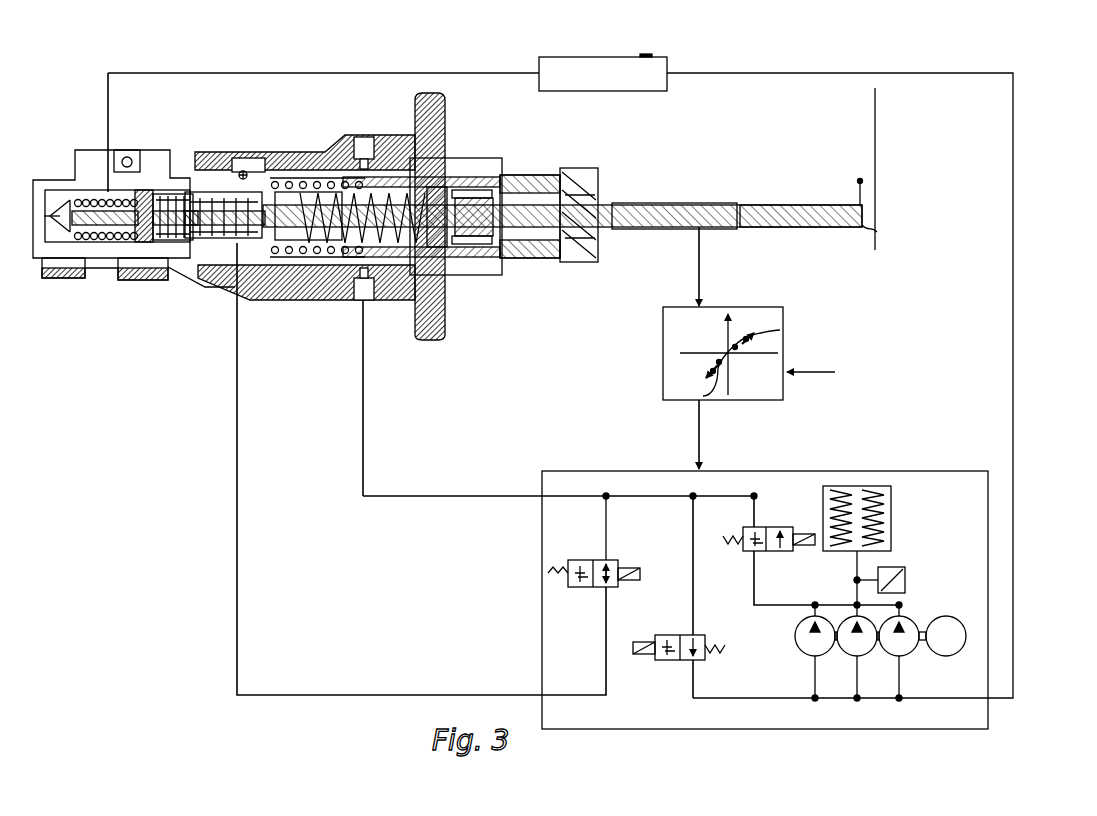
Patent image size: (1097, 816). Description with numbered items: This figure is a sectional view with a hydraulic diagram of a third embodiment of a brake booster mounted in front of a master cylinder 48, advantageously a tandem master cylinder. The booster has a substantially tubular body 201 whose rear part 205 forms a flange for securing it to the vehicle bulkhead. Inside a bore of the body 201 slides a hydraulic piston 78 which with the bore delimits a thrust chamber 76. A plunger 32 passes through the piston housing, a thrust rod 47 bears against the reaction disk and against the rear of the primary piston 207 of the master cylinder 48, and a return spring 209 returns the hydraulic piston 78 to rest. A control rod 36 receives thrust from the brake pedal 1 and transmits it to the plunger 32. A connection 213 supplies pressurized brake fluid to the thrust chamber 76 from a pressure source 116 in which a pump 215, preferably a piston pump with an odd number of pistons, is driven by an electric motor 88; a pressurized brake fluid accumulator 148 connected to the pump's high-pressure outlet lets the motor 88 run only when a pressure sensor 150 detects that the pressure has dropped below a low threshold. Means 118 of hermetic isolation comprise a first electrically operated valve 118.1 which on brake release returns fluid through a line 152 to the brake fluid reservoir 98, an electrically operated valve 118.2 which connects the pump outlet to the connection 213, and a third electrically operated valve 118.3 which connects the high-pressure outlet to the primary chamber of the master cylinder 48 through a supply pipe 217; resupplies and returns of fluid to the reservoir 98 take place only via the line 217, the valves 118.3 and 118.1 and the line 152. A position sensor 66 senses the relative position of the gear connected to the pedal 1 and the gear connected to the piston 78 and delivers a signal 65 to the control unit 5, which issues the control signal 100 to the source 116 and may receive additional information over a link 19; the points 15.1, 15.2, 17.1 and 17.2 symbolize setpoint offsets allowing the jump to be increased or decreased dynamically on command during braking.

The brake pedal 1 is at (876, 234).
The control unit 5 is at (775, 401).
The point 15.1 is at (712, 386).
The point 15.2 is at (706, 374).
The point 17.1 is at (766, 347).
The point 17.2 is at (752, 335).
The link 19 is at (815, 373).
The plunger 32 is at (522, 190).
The control rod 36 is at (836, 228).
The thrust rod 47 is at (413, 258).
The master cylinder 48 is at (98, 262).
The signal 65 is at (700, 262).
The sensor 66 is at (700, 205).
The thrust chamber 76 is at (366, 300).
The hydraulic piston 78 is at (470, 268).
The electric motor 88 is at (946, 656).
The brake fluid reservoir 98 is at (562, 56).
The control signal 100 is at (696, 436).
The pressure source 116 is at (540, 650).
The means of hermetic isolation 118 is at (712, 704).
The first electrically operated valve 118.1 is at (698, 662).
The electrically operated valve 118.2 is at (770, 551).
The third electrically operated valve 118.3 is at (608, 560).
The pressurized brake fluid accumulator 148 is at (892, 512).
The pressure sensor 150 is at (906, 578).
The line 152 is at (905, 80).
The body 201 is at (258, 280).
The rear part 205 is at (445, 100).
The primary piston 207 is at (298, 185).
The return spring 209 is at (325, 262).
The connection 213 is at (358, 302).
The pump 215 is at (916, 613).
The supply pipe 217 is at (237, 412).